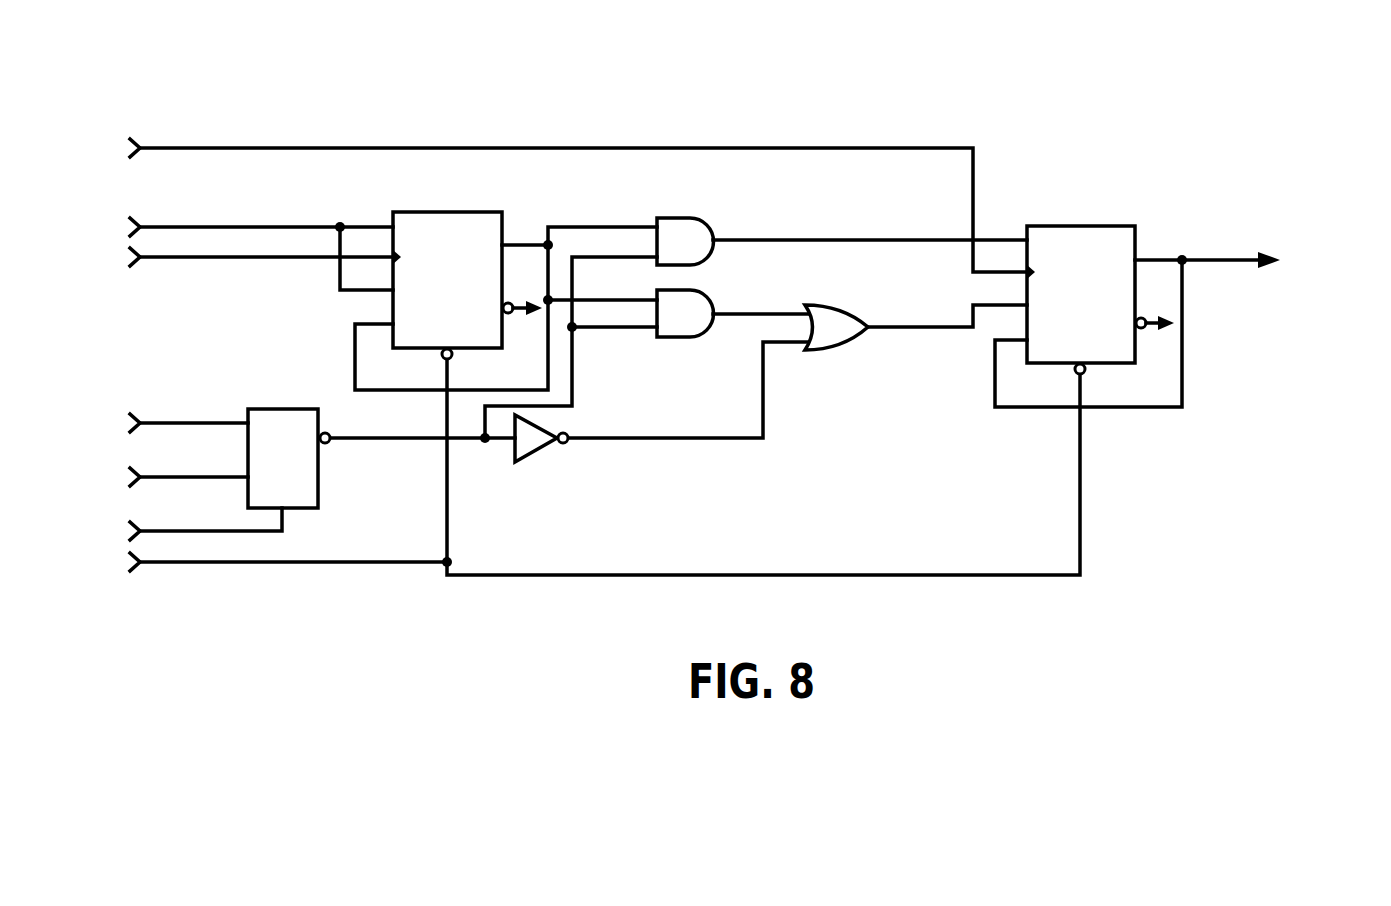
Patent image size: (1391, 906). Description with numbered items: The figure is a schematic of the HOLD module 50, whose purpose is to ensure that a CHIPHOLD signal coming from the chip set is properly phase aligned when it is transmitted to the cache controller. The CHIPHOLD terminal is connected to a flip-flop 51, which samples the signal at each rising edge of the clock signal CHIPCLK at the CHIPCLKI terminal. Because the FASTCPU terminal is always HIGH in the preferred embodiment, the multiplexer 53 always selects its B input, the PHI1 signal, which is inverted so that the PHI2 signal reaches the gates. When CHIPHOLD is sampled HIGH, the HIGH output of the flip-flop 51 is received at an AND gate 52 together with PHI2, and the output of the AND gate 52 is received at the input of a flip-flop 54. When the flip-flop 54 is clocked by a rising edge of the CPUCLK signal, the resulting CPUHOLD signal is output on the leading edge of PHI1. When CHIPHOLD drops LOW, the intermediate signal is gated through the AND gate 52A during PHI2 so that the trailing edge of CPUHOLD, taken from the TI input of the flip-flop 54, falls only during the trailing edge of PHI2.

The HOLD module 50 is at (376, 92).
The flip-flop 51 is at (453, 213).
The AND gate 52 is at (700, 218).
The AND gate 52A is at (700, 290).
The multiplexer 53 is at (318, 495).
The flip-flop 54 is at (1083, 226).